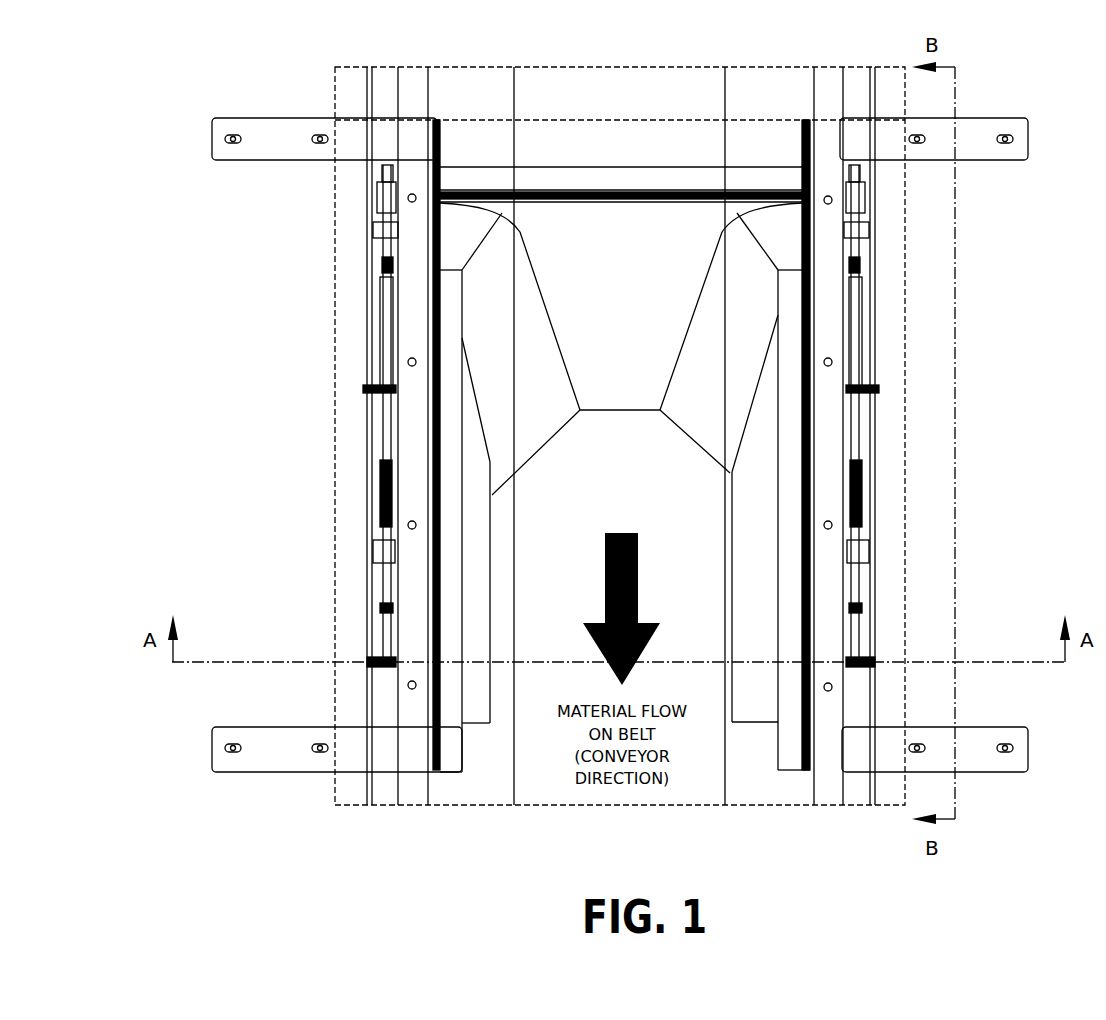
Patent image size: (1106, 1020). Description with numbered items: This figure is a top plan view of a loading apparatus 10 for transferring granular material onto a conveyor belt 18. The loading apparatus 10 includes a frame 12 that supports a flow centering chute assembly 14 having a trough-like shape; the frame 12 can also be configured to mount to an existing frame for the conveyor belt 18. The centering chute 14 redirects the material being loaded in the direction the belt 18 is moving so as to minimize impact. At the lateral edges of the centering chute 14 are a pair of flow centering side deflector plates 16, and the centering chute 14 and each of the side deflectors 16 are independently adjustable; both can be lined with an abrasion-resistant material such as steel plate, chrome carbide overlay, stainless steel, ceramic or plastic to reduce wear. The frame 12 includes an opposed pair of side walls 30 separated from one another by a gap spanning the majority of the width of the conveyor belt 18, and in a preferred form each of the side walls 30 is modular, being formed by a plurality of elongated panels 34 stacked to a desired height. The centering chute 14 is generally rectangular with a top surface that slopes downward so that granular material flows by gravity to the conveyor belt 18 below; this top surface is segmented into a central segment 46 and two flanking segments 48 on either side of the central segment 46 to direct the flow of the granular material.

The loading apparatus 10 is at (290, 96).
The frame 12 is at (828, 642).
The flow centering chute assembly 14 is at (682, 228).
The flow centering side deflector plates 16 is at (472, 425).
The conveyor belt 18 is at (743, 765).
The side walls 30 is at (420, 623).
The elongated panels 34 is at (825, 263).
The central segment 46 is at (612, 368).
The flanking segments 48 is at (532, 413).